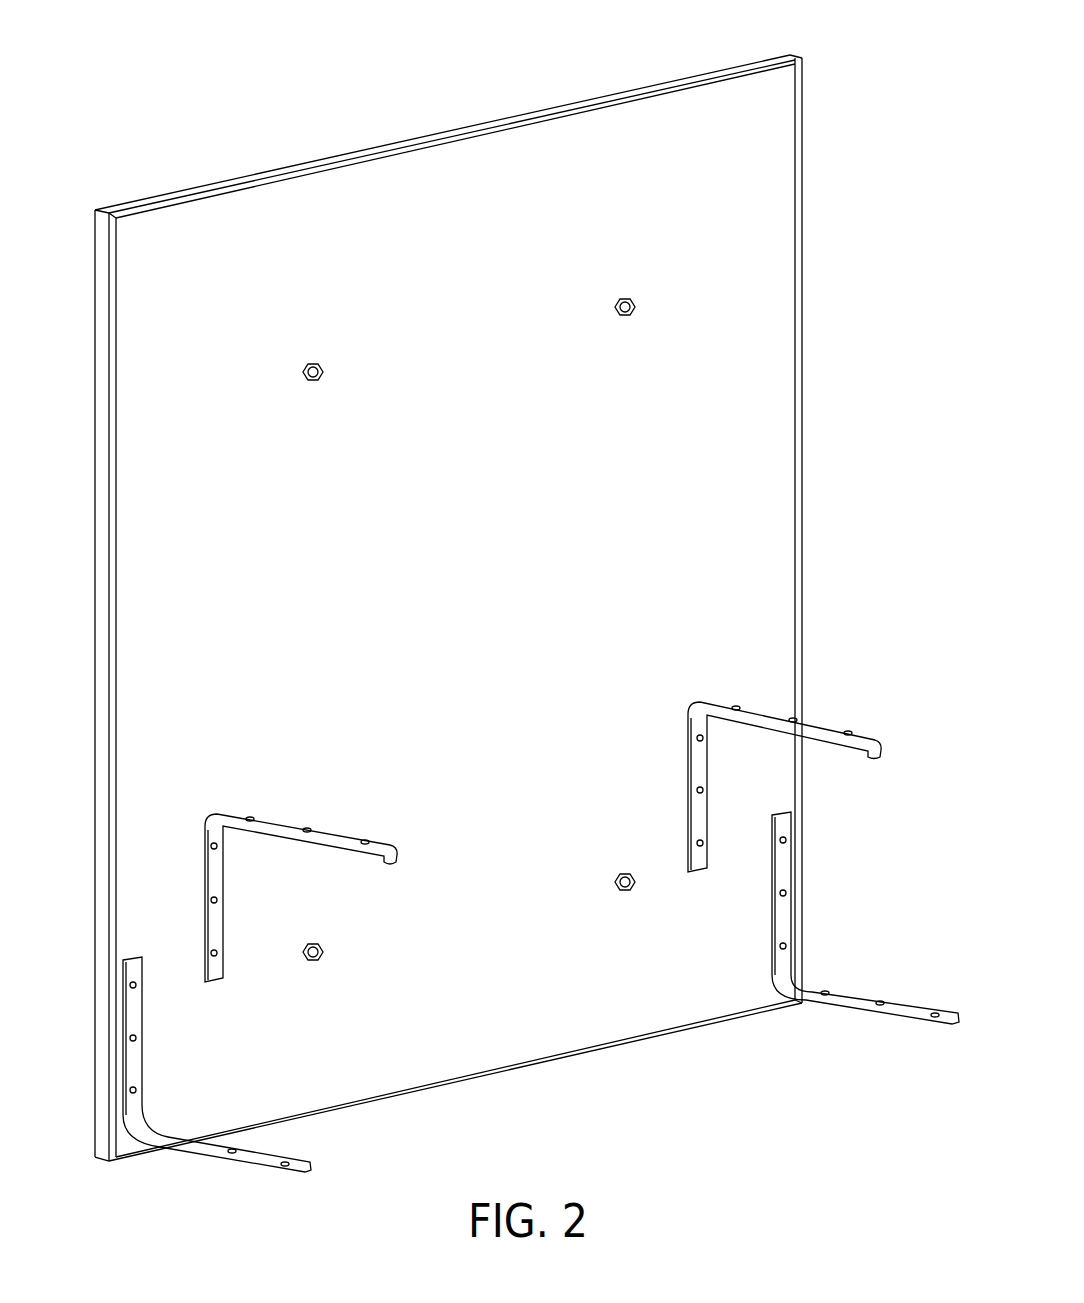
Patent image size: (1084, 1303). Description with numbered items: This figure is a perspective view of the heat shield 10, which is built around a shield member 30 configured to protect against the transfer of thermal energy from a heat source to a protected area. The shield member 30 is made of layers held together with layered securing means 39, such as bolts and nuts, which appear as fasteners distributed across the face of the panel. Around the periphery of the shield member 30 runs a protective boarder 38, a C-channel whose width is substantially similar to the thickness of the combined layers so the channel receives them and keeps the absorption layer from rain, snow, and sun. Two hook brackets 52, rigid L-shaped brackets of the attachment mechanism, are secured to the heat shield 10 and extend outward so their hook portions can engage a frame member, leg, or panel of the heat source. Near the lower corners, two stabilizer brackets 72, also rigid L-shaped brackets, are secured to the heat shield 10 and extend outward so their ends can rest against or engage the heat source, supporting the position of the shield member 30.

The heat shield 10 is at (383, 106).
The shield member 30 is at (715, 190).
The protective boarder 38 is at (288, 172).
The layered securing means 39 is at (634, 303).
The hook bracket 52 is at (240, 815).
The stabilizer bracket 72 is at (541, 992).